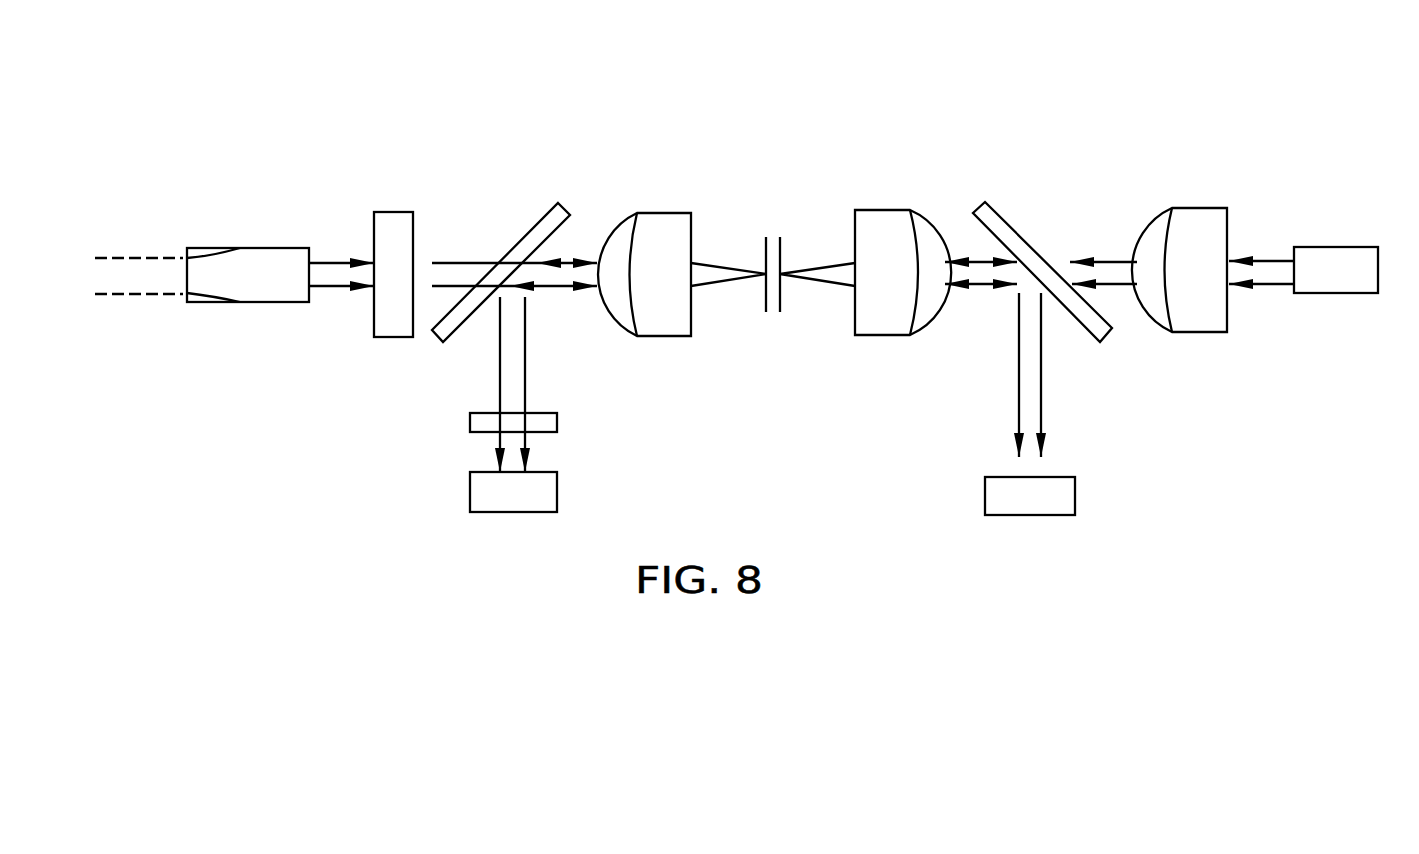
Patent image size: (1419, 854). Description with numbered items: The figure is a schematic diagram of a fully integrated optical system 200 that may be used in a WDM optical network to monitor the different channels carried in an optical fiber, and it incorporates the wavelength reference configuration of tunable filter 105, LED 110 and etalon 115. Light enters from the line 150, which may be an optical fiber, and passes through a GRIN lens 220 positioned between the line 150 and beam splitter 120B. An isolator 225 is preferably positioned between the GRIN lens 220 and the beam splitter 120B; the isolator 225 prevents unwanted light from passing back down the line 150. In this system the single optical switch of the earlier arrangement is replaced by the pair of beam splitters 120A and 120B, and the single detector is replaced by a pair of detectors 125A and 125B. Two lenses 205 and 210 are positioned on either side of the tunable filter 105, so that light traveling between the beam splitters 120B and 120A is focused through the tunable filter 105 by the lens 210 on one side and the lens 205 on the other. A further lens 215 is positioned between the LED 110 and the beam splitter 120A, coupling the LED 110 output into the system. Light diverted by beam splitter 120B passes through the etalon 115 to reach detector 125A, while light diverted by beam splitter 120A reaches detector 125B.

The optical system 200 is at (238, 467).
The line 150 is at (138, 300).
The GRIN lens 220 is at (260, 247).
The isolator 225 is at (387, 338).
The beam splitter 120B is at (545, 212).
The lens 210 is at (617, 215).
The tunable filter 105 is at (773, 348).
The lens 205 is at (933, 212).
The beam splitter 120A is at (1010, 218).
The lens 215 is at (1190, 208).
The LED 110 is at (1315, 245).
The etalon 115 is at (559, 423).
The detector 125A is at (523, 513).
The detector 125B is at (1012, 518).